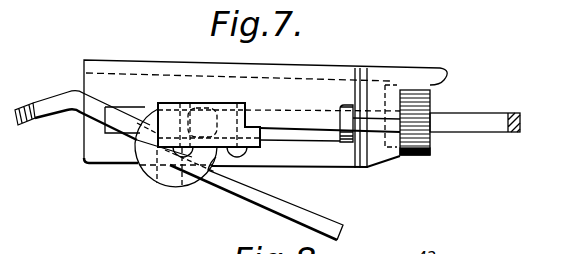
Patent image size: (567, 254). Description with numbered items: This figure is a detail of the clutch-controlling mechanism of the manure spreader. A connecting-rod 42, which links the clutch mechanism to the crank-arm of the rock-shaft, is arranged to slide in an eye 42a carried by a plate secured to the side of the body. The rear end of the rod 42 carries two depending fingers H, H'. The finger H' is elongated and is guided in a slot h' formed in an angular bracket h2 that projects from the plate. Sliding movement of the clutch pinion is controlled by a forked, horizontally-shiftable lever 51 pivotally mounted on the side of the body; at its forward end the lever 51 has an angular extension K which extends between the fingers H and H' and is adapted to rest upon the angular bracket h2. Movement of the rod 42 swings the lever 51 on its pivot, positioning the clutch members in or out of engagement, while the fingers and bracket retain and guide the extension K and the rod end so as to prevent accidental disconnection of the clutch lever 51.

The forked horizontally-shiftable lever 51 is at (48, 120).
The depending finger H is at (172, 162).
The depending finger H' is at (209, 120).
The angular extension K is at (238, 183).
The slot h' is at (330, 160).
The angular bracket h2 is at (316, 157).
The connecting-rod 42 is at (483, 113).
The eye 42a is at (415, 157).